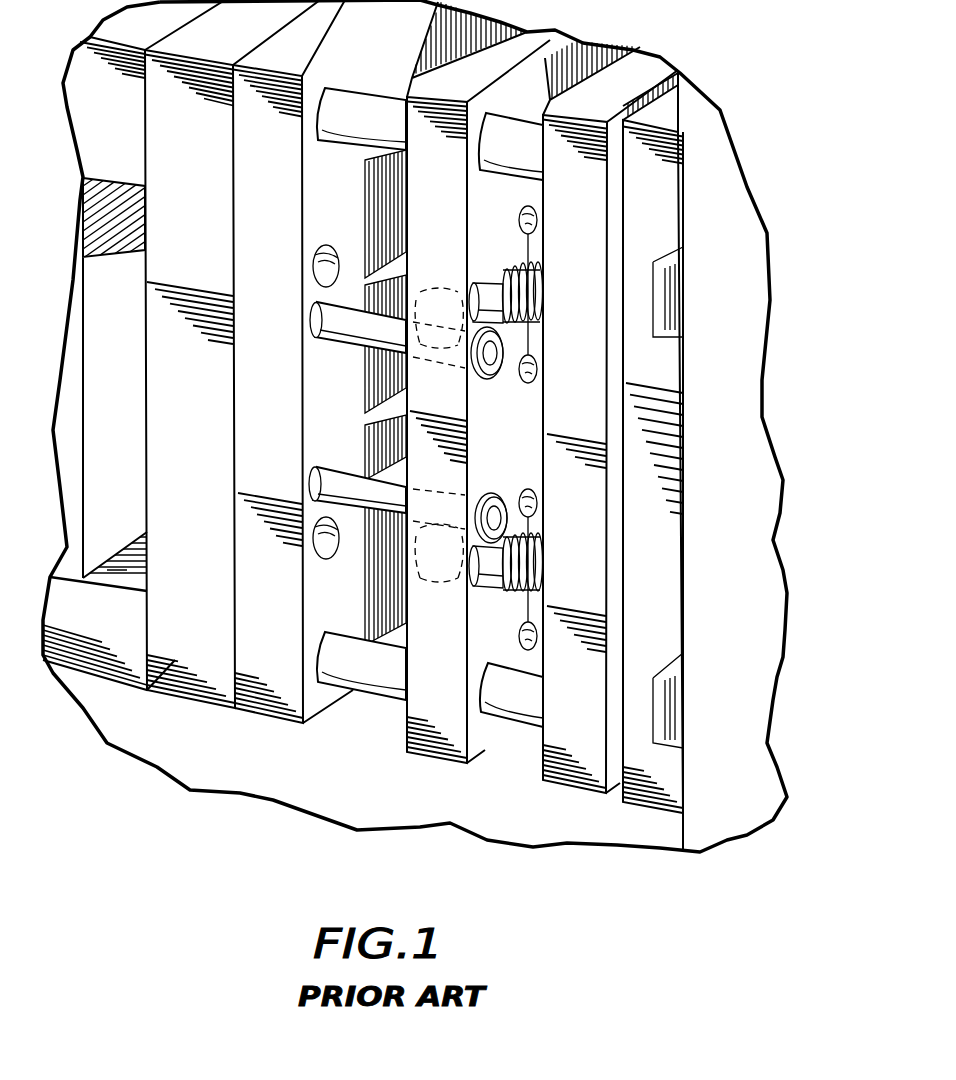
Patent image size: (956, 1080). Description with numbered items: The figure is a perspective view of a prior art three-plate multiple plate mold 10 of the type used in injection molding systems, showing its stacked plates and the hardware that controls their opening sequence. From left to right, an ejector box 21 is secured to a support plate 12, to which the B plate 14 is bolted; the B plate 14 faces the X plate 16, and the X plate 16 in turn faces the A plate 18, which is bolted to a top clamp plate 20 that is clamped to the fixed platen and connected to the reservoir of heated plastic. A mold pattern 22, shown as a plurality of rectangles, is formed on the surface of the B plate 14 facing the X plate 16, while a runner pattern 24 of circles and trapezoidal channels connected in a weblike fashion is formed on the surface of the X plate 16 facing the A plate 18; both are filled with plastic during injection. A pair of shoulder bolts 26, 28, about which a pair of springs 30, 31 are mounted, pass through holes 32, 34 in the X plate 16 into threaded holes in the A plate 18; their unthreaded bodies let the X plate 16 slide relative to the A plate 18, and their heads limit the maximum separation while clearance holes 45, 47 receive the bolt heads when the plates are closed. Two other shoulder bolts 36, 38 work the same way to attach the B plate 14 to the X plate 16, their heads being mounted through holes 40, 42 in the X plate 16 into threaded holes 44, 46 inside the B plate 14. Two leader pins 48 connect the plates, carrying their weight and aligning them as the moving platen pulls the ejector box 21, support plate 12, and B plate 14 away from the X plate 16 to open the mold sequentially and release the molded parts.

The multiple plate mold 10 is at (439, 465).
The support plate 12 is at (205, 694).
The B plate 14 is at (283, 702).
The X plate 16 is at (440, 720).
The A plate 18 is at (580, 795).
The top clamp plate 20 is at (657, 813).
The ejector box 21 is at (132, 670).
The mold pattern 22 is at (397, 208).
The runner pattern 24 is at (507, 215).
The shoulder bolt 26 is at (480, 285).
The shoulder bolt 28 is at (485, 586).
The spring 30 is at (540, 283).
The spring 31 is at (538, 540).
The hole 32 is at (460, 272).
The hole 34 is at (473, 567).
The shoulder bolt 36 is at (346, 337).
The shoulder bolt 38 is at (347, 562).
The hole 40 is at (488, 378).
The hole 42 is at (490, 494).
The threaded hole 44 is at (317, 303).
The clearance hole 45 is at (322, 250).
The threaded hole 46 is at (320, 467).
The clearance hole 47 is at (320, 555).
The leader pins 48 is at (378, 110).